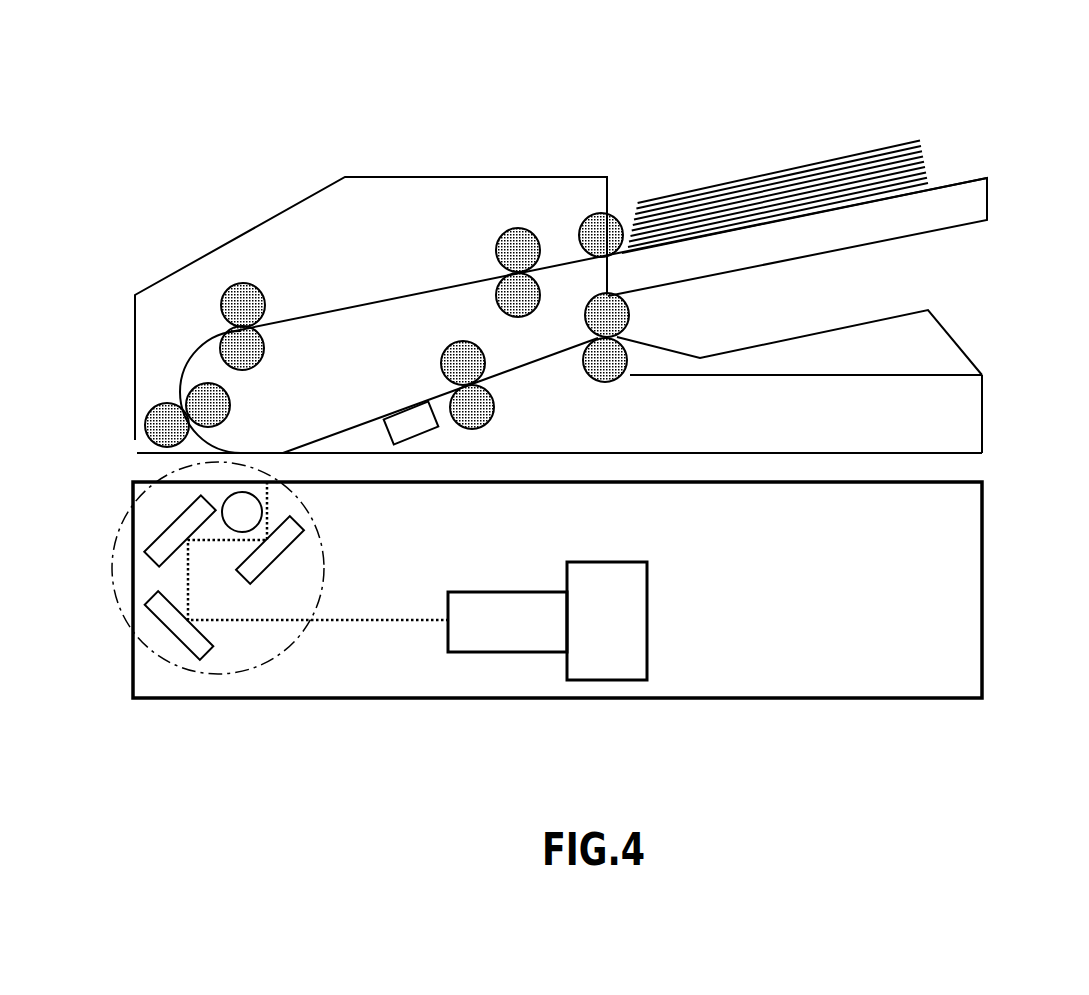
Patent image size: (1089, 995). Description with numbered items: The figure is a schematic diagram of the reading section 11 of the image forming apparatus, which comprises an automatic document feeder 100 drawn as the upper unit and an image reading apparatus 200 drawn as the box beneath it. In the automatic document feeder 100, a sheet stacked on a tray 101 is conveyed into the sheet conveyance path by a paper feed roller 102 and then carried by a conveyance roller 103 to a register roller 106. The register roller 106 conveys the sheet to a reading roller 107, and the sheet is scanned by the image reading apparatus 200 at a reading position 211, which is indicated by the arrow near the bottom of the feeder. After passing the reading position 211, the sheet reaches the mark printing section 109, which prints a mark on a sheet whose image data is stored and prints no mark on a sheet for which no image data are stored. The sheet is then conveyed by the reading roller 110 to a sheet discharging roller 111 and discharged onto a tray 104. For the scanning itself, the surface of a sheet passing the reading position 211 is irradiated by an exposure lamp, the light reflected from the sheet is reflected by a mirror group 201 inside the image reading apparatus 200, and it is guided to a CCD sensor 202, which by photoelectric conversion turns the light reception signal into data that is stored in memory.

The reading section 11 is at (817, 96).
The automatic document feeder 100 is at (330, 178).
The tray 101 is at (937, 208).
The paper feed roller 102 is at (621, 216).
The conveyance roller 103 is at (522, 226).
The tray 104 is at (863, 323).
The register roller 106 is at (245, 282).
The reading roller 107 is at (158, 403).
The mark printing section 109 is at (416, 418).
The reading roller 110 is at (495, 416).
The sheet discharging roller 111 is at (613, 382).
The image reading apparatus 200 is at (984, 572).
The mirror group 201 is at (132, 512).
The CCD sensor 202 is at (518, 590).
The reading position 211 is at (292, 466).